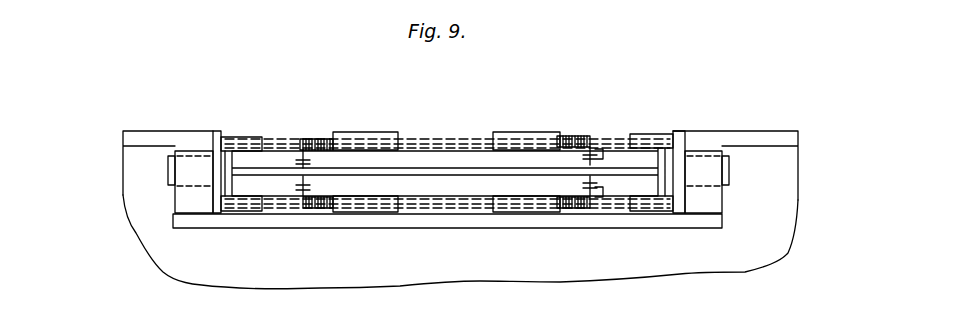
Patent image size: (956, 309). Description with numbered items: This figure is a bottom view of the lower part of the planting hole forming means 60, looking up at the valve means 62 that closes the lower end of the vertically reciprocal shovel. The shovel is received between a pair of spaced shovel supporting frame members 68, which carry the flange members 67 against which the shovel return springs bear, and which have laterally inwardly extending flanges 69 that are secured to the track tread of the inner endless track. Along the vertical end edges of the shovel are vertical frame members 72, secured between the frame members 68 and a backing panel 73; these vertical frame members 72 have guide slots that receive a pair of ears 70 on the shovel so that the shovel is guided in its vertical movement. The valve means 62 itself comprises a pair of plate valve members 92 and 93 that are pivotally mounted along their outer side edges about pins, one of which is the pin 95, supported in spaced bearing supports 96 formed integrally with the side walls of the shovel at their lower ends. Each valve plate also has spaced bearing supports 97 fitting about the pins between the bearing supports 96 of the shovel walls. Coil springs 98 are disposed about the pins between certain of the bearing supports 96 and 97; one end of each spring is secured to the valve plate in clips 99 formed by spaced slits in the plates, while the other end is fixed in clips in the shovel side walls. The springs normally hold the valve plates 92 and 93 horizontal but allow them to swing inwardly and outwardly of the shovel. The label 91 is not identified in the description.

The planting hole forming means 60 is at (566, 126).
The valve means 62 is at (436, 136).
The flange members 67 is at (217, 128).
The shovel supporting frame members 68 is at (135, 134).
The flanges 69 is at (147, 233).
The ears 70 is at (168, 163).
The vertical frame members 72 is at (187, 150).
The backing panel 73 is at (702, 220).
The guide rod 91 is at (531, 141).
The plate valve member 92 is at (458, 166).
The plate valve member 93 is at (478, 188).
The pin 95 is at (542, 210).
The bearing supports 96 is at (240, 143).
The bearing supports 97 is at (278, 143).
The coil springs 98 is at (312, 138).
The clips 99 is at (301, 160).